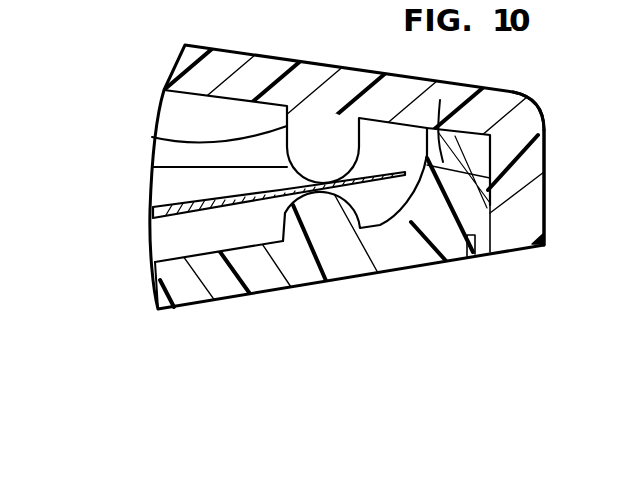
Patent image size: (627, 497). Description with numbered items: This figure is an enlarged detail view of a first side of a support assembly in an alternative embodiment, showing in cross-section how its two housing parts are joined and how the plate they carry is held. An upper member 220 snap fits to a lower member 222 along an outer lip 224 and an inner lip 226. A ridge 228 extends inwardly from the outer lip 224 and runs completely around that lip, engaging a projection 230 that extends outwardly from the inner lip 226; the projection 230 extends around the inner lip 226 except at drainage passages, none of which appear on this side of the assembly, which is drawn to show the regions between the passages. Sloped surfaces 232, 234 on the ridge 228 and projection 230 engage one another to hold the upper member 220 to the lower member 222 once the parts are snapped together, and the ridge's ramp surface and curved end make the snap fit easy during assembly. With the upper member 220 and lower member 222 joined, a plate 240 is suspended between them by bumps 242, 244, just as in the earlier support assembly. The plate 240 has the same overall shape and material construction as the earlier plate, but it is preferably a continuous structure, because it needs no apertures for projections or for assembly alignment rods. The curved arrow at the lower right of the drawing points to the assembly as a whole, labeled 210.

The upper member 220 is at (173, 67).
The lower member 222 is at (157, 296).
The outer lip 224 is at (544, 160).
The inner lip 226 is at (385, 222).
The ridge 228 is at (478, 232).
The projection 230 is at (543, 135).
The sloped surface 232 is at (465, 245).
The sloped surface 234 is at (440, 100).
The plate 240 is at (153, 207).
The bump 242 is at (285, 212).
The bump 244 is at (152, 137).
The assembly 210 is at (537, 264).